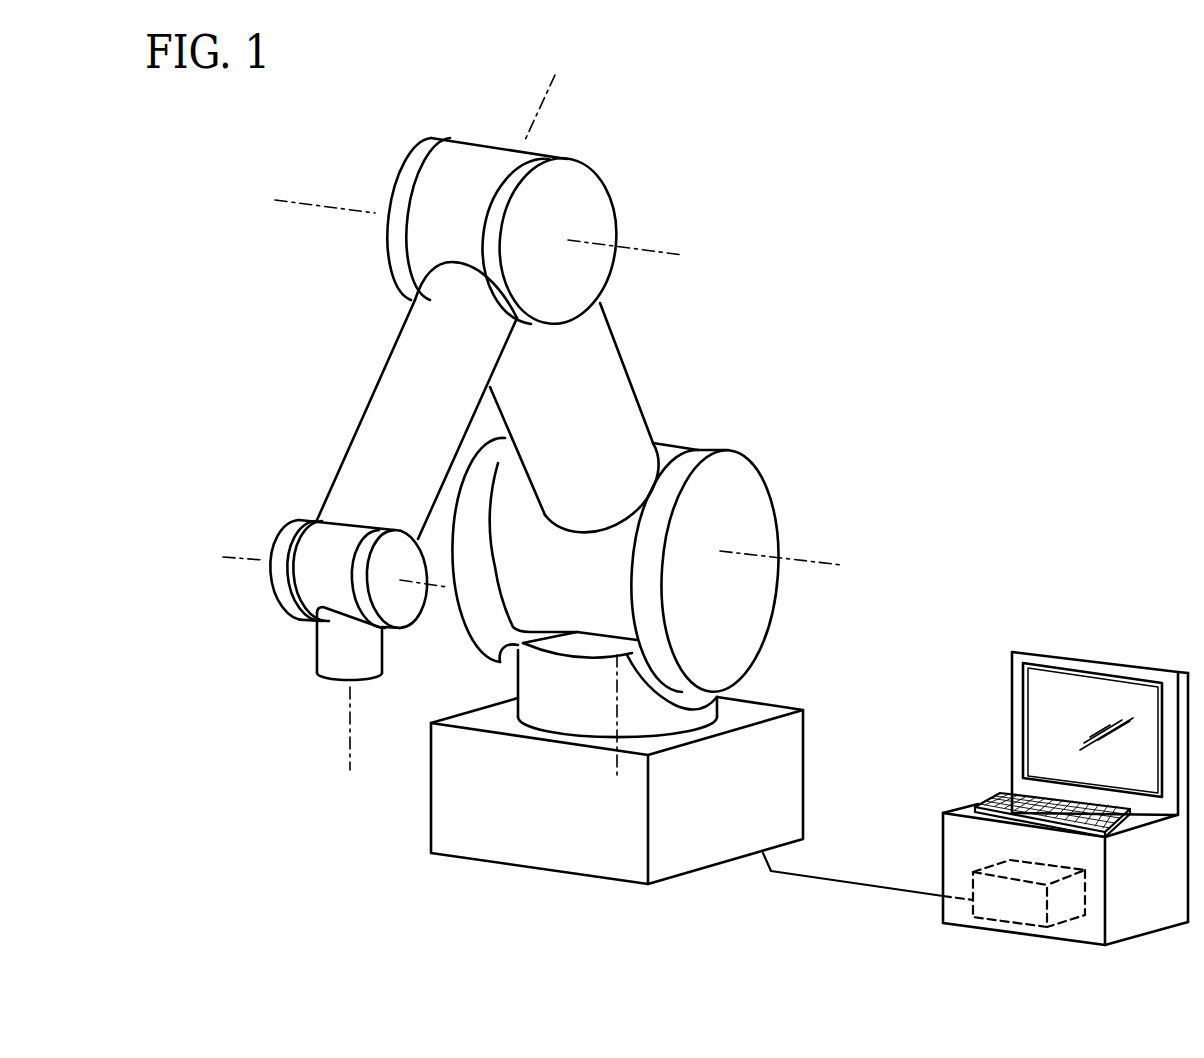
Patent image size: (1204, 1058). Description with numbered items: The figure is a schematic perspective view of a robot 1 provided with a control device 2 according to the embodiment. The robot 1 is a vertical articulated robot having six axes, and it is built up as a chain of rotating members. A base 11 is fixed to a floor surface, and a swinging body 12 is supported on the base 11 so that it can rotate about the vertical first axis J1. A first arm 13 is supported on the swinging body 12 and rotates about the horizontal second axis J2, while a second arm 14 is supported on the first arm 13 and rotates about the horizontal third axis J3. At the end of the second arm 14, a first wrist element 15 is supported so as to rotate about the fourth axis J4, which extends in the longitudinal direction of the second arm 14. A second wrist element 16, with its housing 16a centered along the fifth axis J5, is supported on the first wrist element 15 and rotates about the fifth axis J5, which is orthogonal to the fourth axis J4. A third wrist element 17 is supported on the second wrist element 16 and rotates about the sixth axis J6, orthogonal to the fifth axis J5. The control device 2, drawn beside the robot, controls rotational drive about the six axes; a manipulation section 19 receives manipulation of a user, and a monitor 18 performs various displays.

The robot 1 is at (1038, 199).
The control device 2 is at (980, 870).
The base 11 is at (805, 745).
The swinging body 12 is at (740, 704).
The first arm 13 is at (640, 406).
The second arm 14 is at (380, 371).
The first wrist element 15 is at (280, 533).
The second wrist element 16 is at (317, 550).
The housing 16a is at (272, 604).
The third wrist element 17 is at (363, 653).
The monitor 18 is at (1040, 703).
The manipulation section 19 is at (1000, 795).
The first axis J1 is at (655, 794).
The second axis J2 is at (862, 520).
The third axis J3 is at (702, 214).
The fourth axis J4 is at (593, 69).
The fifth axis J5 is at (223, 517).
The sixth axis J6 is at (367, 731).